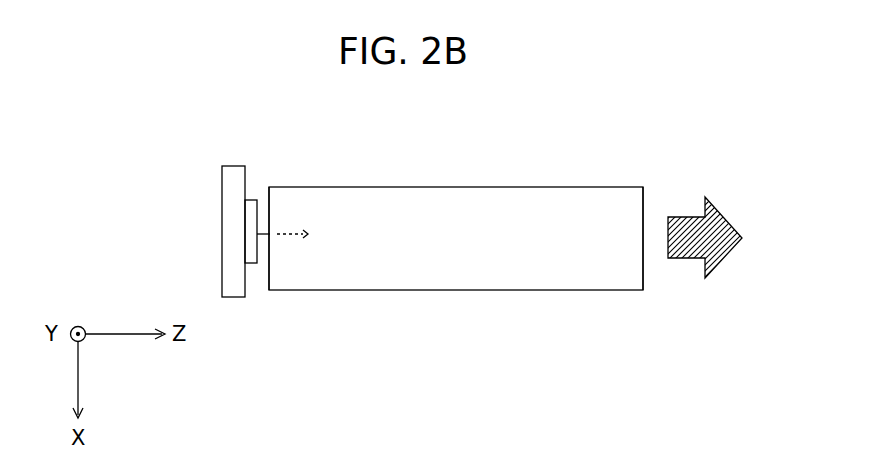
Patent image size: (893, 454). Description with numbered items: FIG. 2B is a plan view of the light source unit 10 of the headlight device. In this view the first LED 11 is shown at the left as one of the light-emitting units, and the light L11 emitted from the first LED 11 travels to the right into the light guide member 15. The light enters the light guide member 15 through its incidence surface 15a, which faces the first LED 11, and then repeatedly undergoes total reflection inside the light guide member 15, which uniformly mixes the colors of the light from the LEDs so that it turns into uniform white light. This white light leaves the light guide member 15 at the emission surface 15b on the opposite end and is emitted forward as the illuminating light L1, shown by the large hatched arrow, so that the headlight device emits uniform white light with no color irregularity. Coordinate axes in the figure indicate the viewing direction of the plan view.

The light source unit 10 is at (586, 91).
The first LED 11 is at (222, 234).
The light guide member 15 is at (495, 187).
The incidence surface 15a is at (268, 190).
The emission surface 15b is at (645, 198).
The light emitted from the first LED L11 is at (282, 233).
The illuminating light L1 is at (727, 220).